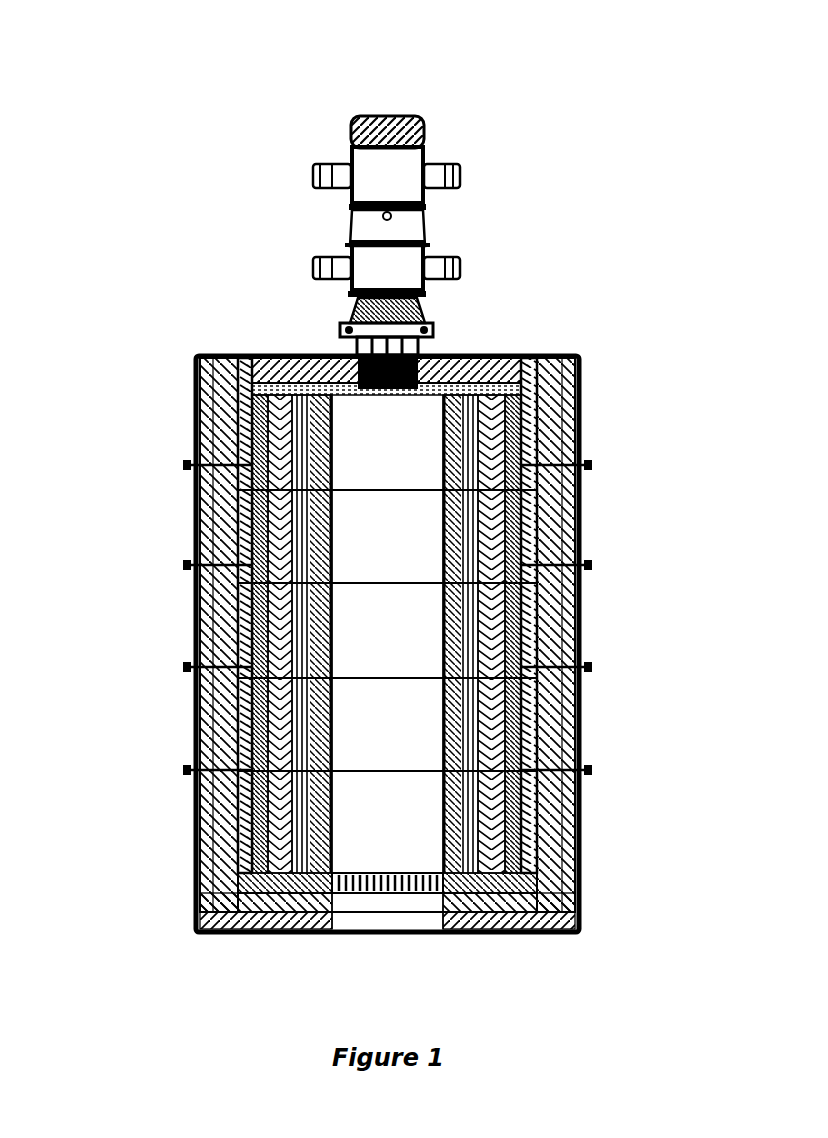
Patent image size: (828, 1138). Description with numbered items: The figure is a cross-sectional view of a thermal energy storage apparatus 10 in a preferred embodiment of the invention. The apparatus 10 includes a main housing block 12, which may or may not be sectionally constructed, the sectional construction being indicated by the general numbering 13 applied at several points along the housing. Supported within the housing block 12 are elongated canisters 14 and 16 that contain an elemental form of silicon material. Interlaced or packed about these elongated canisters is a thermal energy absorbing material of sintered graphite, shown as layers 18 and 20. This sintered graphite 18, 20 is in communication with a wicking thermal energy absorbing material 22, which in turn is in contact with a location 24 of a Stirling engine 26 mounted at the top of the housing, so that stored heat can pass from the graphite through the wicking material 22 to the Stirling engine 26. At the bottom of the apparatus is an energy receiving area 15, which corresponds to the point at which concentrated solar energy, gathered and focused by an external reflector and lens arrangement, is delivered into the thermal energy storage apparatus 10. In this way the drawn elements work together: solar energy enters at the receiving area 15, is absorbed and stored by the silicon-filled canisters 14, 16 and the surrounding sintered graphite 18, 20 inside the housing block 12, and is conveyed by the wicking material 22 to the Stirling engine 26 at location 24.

The thermal energy storage apparatus 10 is at (557, 213).
The main housing block 12 is at (578, 352).
The sectional construction 13 is at (188, 450).
The elongated canister 14 is at (542, 352).
The energy receiving area 15 is at (392, 948).
The elongated canister 16 is at (492, 355).
The thermal energy absorbing material 18 is at (222, 355).
The thermal energy absorbing material 20 is at (260, 440).
The wicking thermal energy absorbing material 22 is at (282, 355).
The location of the Stirling engine 24 is at (322, 352).
The Stirling engine 26 is at (378, 113).